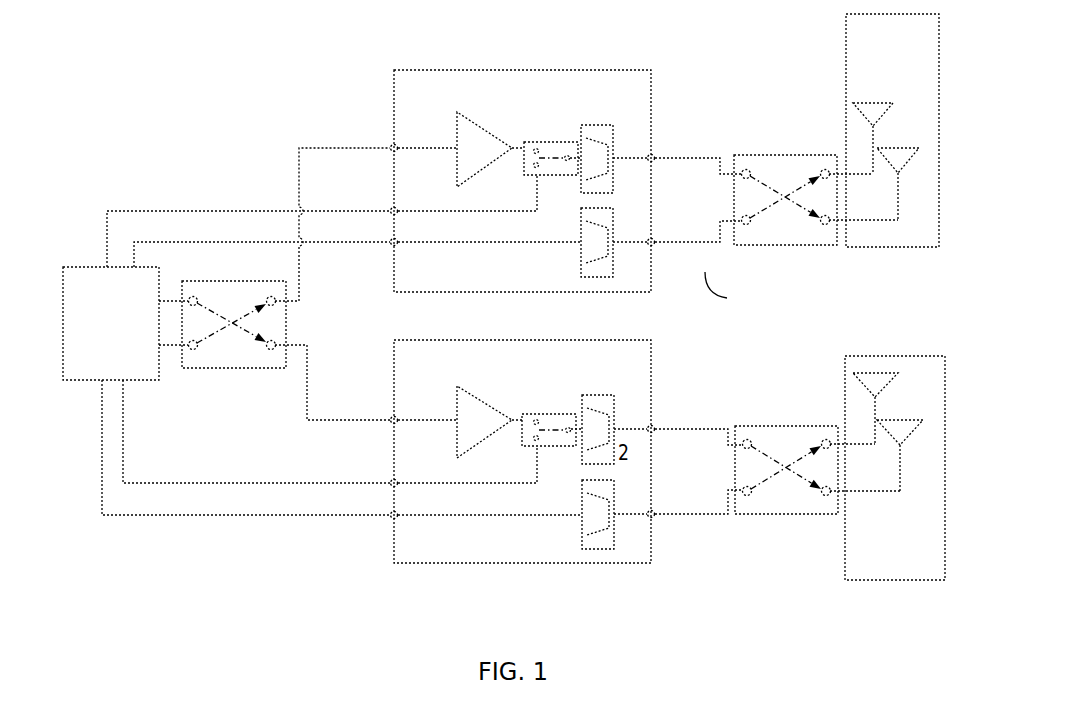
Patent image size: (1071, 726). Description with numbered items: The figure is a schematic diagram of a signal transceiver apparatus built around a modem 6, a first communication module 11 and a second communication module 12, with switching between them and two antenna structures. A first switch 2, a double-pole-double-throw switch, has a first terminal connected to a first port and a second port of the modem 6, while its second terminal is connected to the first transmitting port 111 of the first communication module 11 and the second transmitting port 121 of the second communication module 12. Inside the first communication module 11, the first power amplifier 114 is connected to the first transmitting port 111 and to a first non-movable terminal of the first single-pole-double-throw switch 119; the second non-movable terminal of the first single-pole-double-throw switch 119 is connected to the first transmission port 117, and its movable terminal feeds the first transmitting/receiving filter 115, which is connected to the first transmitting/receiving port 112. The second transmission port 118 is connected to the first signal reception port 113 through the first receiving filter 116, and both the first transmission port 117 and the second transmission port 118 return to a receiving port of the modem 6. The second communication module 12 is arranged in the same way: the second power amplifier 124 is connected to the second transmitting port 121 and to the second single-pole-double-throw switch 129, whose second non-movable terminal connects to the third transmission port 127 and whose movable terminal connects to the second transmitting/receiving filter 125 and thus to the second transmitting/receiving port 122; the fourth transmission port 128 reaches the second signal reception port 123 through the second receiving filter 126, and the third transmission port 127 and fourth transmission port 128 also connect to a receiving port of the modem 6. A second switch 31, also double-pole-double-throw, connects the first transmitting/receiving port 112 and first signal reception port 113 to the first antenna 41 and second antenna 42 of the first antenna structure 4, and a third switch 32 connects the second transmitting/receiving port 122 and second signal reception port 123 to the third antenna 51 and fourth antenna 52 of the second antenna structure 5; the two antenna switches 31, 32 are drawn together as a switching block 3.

The modem 6 is at (83, 266).
The first switch 2 is at (287, 330).
The first communication module 11 is at (655, 100).
The first transmitting port 111 is at (390, 147).
The first transmitting/receiving port 112 is at (657, 155).
The first signal reception port 113 is at (655, 240).
The first power amplifier 114 is at (456, 113).
The first transmitting/receiving filter 115 is at (598, 125).
The first receiving filter 116 is at (613, 278).
The first transmission port 117 is at (391, 210).
The second transmission port 118 is at (391, 243).
The first single-pole-double-throw switch 119 is at (552, 142).
The second communication module 12 is at (653, 360).
The second transmitting port 121 is at (392, 418).
The second transmitting/receiving port 122 is at (654, 424).
The second signal reception port 123 is at (654, 510).
The second power amplifier 124 is at (457, 395).
The second transmitting/receiving filter 125 is at (607, 395).
The second receiving filter 126 is at (615, 550).
The third transmission port 127 is at (392, 481).
The fourth transmission port 128 is at (392, 513).
The second single-pole-double-throw switch 129 is at (542, 414).
The antenna switch module 3 is at (716, 277).
The second switch 31 is at (760, 155).
The third switch 32 is at (777, 424).
The first antenna structure 4 is at (939, 213).
The first antenna 41 is at (853, 103).
The second antenna 42 is at (920, 148).
The second antenna structure 5 is at (945, 498).
The third antenna 51 is at (853, 373).
The fourth antenna 52 is at (918, 420).